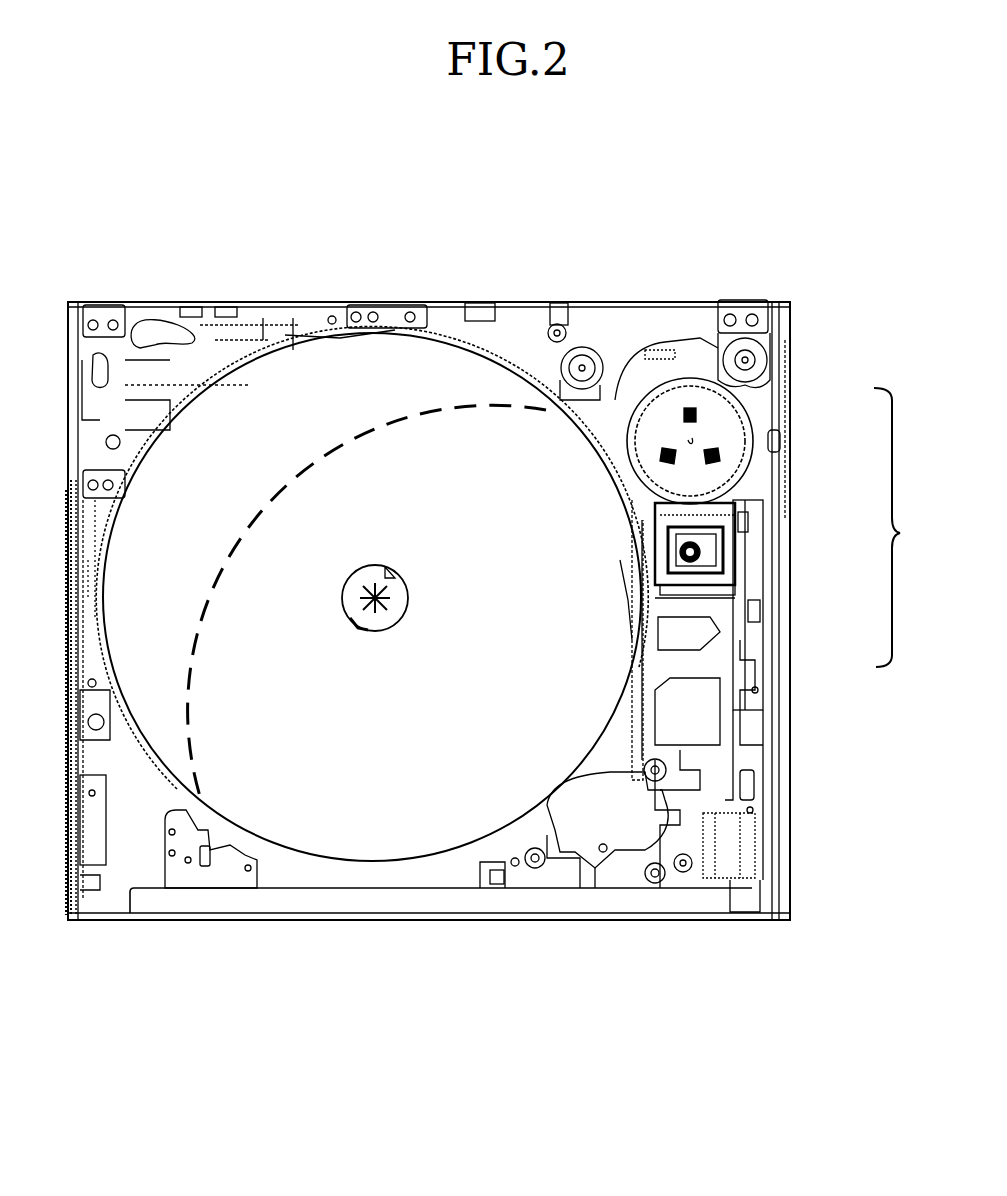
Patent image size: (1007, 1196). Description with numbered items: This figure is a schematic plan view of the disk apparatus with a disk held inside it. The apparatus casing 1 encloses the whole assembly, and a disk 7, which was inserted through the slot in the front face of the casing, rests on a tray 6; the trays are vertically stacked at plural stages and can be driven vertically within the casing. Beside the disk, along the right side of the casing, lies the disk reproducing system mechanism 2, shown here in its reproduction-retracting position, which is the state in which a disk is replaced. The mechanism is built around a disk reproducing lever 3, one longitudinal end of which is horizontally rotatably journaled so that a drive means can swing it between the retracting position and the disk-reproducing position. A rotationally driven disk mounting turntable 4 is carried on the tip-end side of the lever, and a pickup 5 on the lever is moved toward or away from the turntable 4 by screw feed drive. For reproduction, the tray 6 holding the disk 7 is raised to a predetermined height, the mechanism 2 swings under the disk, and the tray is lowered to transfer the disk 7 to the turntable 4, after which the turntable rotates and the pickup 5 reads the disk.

The apparatus casing 1 is at (268, 928).
The disk reproducing system mechanism 2 is at (904, 527).
The disk reproducing lever 3 is at (743, 652).
The disk mounting turntable 4 is at (718, 411).
The pickup 5 is at (702, 545).
The tray 6 is at (281, 350).
The disk 7 is at (404, 862).